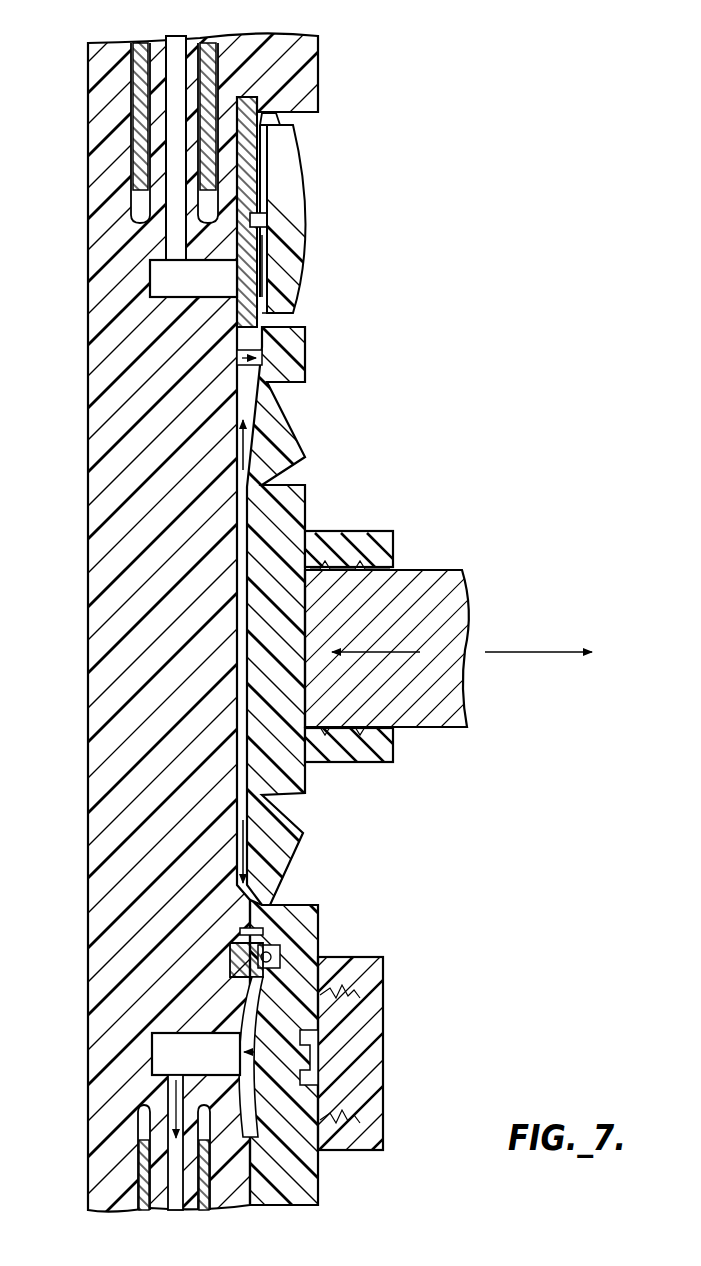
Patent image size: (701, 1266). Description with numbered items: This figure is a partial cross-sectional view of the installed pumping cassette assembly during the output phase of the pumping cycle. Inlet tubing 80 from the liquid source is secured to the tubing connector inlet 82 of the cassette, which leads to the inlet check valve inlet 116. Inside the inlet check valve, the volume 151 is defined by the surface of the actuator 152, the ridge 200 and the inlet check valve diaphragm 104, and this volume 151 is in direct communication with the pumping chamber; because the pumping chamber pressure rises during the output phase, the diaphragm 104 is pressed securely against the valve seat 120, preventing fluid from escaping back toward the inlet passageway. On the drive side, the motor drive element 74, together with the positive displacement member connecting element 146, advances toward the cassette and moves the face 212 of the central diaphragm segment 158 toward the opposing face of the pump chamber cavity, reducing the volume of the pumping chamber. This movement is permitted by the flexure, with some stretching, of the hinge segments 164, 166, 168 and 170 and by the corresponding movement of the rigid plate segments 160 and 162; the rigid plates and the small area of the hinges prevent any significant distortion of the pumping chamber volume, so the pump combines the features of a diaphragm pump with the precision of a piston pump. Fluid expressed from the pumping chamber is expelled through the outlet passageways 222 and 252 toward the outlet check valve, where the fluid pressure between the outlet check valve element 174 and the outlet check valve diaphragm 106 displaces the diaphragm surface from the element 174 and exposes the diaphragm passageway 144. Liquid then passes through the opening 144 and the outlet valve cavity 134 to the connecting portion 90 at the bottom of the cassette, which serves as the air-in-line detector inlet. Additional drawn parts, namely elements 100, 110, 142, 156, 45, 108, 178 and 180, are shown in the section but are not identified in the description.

The housing body 100 is at (140, 712).
The bolt 110 is at (157, 72).
The tubing connector inlet 82 is at (176, 50).
The inlet tubing 80 is at (212, 45).
The inlet check valve inlet 116 is at (160, 282).
The inlet check valve diaphragm 104 is at (245, 285).
The volume 151 is at (260, 182).
The block 142 is at (258, 222).
The actuator 152 is at (262, 247).
The valve seat 120 is at (282, 262).
The ridge 200 is at (295, 135).
The wedge 156 is at (268, 117).
The rigid plate segment 160 is at (288, 452).
The outlet passageway 252 is at (262, 358).
The hinge segment 166 is at (278, 385).
The hinge segment 164 is at (266, 484).
The central diaphragm segment 158 is at (282, 548).
The positive displacement member connecting element 146 is at (370, 548).
The flange 45 is at (370, 740).
The motor drive element 74 is at (420, 604).
The face 212 is at (243, 547).
The hinge segment 168 is at (272, 800).
The rigid plate segment 162 is at (292, 840).
The hinge segment 170 is at (276, 903).
The outlet passageway 222 is at (275, 955).
The nut 108 is at (345, 1003).
The outlet check valve element 174 is at (330, 1073).
The plate 180 is at (245, 930).
The outlet check valve diaphragm 106 is at (235, 950).
The cam 178 is at (252, 1012).
The diaphragm passageway 144 is at (245, 1052).
The outlet valve cavity 134 is at (162, 1050).
The connecting portion 90 is at (140, 1160).